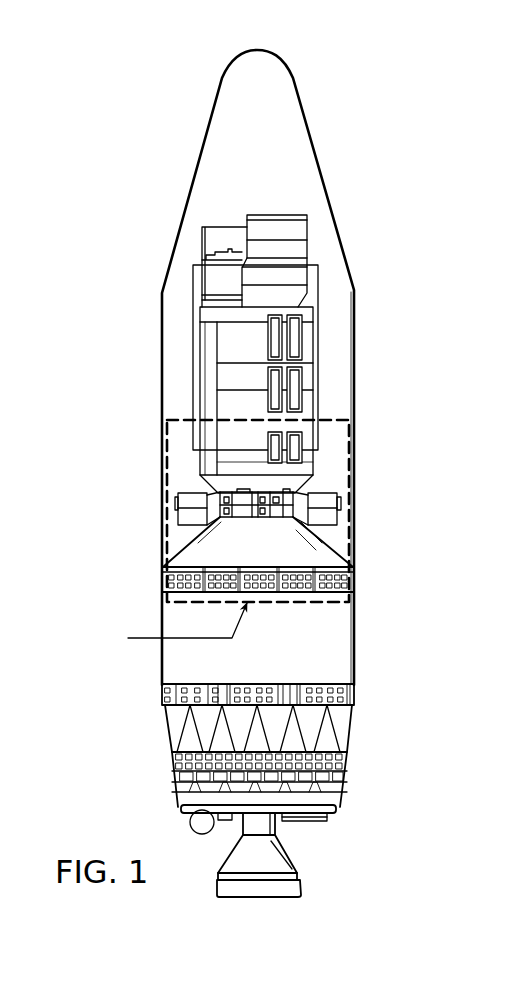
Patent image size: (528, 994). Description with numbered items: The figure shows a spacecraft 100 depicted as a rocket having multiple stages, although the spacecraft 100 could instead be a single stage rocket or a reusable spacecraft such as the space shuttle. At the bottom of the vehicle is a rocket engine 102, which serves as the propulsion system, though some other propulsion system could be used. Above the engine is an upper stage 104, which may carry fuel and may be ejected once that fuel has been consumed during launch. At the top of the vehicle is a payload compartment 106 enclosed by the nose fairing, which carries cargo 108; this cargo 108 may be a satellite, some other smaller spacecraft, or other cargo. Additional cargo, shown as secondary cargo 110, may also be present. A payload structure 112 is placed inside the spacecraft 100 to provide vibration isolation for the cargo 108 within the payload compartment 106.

The spacecraft 100 is at (390, 112).
The rocket engine 102 is at (320, 863).
The upper stage 104 is at (158, 670).
The payload compartment 106 is at (357, 307).
The cargo 108 is at (193, 365).
The secondary cargo 110 is at (197, 567).
The payload structure 112 is at (318, 546).